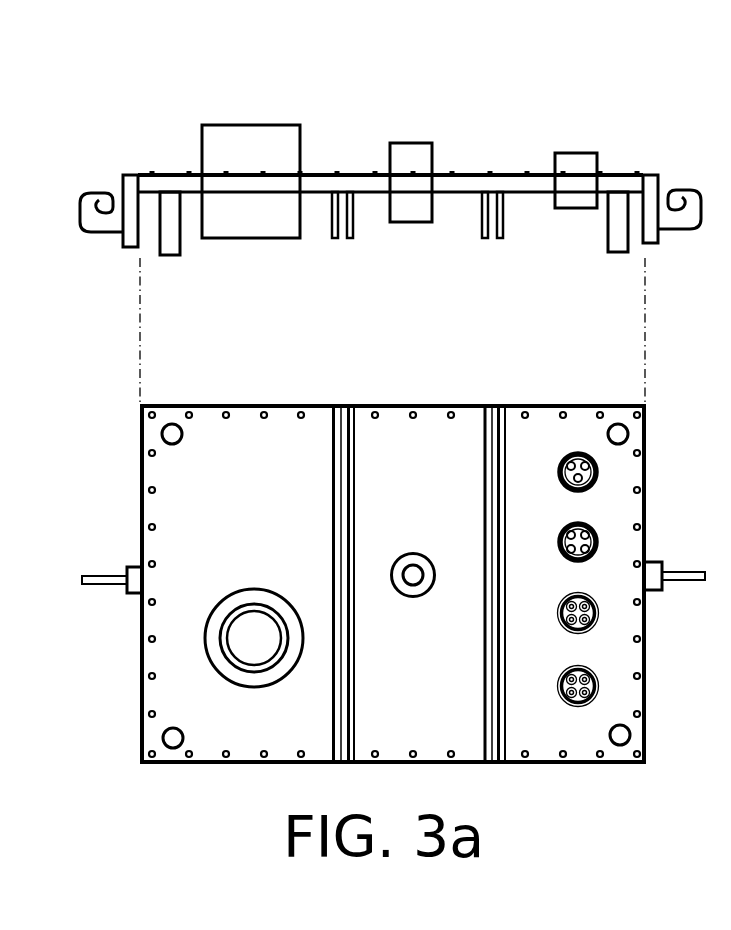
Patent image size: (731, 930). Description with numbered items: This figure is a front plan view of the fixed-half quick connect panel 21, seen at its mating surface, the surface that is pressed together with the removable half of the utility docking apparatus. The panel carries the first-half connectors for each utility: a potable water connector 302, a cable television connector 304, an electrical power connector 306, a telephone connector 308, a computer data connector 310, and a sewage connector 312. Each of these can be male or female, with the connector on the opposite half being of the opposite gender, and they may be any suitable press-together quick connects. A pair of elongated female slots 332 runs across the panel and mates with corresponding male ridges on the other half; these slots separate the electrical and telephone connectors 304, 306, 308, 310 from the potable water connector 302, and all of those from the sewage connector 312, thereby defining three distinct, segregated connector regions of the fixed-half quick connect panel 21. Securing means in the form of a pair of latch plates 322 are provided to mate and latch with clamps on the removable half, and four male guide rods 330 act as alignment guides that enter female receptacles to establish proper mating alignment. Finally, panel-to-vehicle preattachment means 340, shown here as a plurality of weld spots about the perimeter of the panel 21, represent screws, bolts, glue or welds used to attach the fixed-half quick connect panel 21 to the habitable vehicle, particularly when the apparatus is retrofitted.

The fixed-half quick connect panel 21 is at (265, 519).
The potable water connector 302 is at (417, 556).
The cable television connector 304 is at (570, 208).
The electrical power connector 306 is at (600, 542).
The telephone connector 308 is at (600, 612).
The computer data connector 310 is at (600, 685).
The sewage connector 312 is at (265, 632).
The latch plates 322 is at (108, 208).
The male guide rods 330 is at (170, 233).
The elongated female slots 332 is at (345, 475).
The panel-to-vehicle preattachment means 340 is at (525, 173).